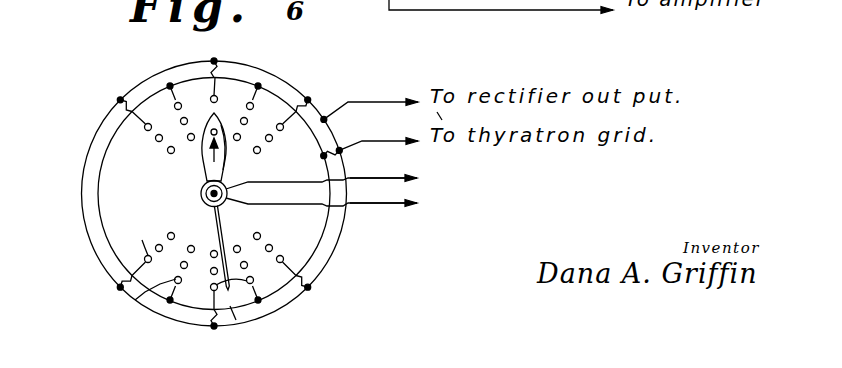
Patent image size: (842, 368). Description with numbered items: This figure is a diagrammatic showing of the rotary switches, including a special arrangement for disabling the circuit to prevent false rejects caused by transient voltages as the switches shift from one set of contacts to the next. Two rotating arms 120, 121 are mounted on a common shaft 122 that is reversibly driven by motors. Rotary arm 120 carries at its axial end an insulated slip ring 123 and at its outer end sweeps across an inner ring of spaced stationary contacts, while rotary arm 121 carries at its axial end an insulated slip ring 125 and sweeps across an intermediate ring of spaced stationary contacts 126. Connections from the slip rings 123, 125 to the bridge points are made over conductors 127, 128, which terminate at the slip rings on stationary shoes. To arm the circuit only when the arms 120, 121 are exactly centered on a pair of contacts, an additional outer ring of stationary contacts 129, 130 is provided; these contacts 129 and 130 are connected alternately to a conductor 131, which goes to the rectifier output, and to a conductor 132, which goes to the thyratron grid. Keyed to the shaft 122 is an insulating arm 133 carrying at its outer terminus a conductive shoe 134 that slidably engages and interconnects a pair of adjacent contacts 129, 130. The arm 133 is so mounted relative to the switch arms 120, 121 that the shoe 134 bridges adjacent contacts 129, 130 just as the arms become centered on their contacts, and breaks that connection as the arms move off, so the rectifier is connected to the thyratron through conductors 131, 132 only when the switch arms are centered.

The rotating arm 120 is at (204, 171).
The rotating arm 121 is at (219, 167).
The common shaft 122 is at (207, 203).
The insulated slip ring 123 is at (200, 193).
The insulated slip ring 125 is at (224, 201).
The stationary contacts 126 is at (261, 147).
The conductor 127 is at (382, 178).
The conductor 128 is at (382, 204).
The stationary contact 129 is at (156, 238).
The stationary contact 130 is at (121, 290).
The conductor 131 is at (92, 247).
The conductor 132 is at (110, 260).
The insulating arm 133 is at (221, 240).
The conductive shoe 134 is at (236, 320).